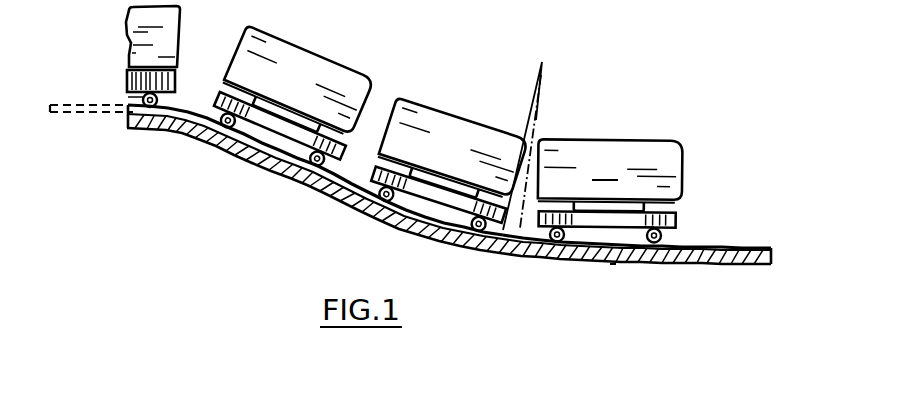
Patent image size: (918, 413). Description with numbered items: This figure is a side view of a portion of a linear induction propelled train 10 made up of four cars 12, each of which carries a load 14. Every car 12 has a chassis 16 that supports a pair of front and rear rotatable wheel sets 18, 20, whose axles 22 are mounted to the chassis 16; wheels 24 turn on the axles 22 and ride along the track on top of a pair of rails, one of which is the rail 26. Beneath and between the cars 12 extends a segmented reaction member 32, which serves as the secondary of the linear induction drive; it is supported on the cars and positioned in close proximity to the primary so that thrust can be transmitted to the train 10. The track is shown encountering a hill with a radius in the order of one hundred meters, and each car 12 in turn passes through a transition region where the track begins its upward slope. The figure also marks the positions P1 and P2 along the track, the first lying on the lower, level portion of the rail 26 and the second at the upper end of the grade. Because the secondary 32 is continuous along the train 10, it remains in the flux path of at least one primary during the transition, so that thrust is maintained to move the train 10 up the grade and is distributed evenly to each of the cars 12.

The train 10 is at (646, 146).
The car 12 is at (610, 171).
The load 14 is at (605, 167).
The chassis 16 is at (607, 214).
The front wheel set 18 is at (680, 234).
The rear wheel set 20 is at (550, 268).
The axle 22 is at (557, 234).
The wheel 24 is at (654, 235).
The rail 26 is at (757, 249).
The segmented reaction member 32 is at (357, 158).
The position P1 is at (613, 266).
The position P2 is at (90, 116).